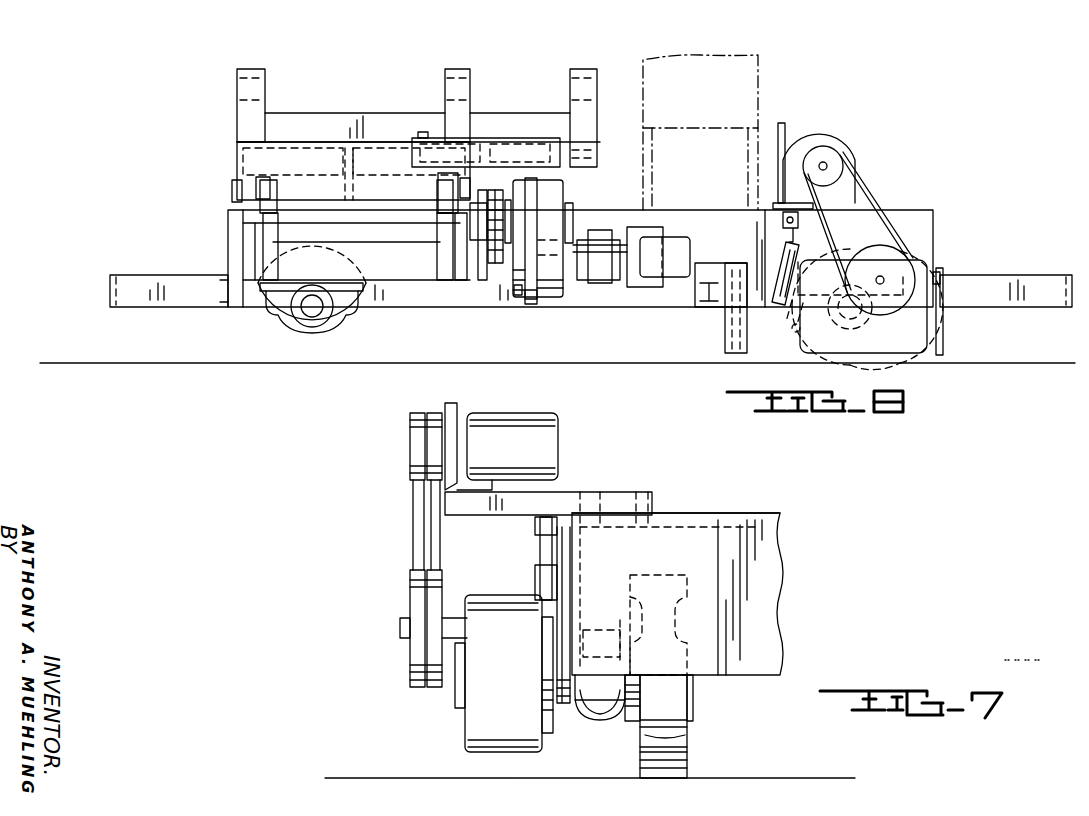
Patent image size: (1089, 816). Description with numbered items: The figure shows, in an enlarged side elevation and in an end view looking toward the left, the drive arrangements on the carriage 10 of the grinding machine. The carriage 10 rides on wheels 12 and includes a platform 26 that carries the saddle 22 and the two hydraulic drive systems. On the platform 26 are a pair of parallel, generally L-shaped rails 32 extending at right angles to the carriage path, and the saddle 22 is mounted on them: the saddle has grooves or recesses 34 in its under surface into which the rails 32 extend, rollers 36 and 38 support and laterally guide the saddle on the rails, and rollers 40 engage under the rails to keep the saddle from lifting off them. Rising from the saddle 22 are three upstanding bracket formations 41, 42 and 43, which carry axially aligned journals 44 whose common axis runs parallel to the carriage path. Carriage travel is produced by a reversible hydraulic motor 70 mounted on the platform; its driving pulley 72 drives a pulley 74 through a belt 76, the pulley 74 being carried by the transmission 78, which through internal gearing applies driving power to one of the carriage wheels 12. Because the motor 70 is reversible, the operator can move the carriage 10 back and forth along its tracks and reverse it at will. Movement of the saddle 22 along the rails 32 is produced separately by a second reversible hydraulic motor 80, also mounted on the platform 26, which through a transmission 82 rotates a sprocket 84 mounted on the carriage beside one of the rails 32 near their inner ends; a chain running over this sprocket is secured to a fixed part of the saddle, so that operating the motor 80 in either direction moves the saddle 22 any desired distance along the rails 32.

In FIG. 6, the carriage 10 is at (932, 195).
In FIG. 7, the carriage 10 is at (790, 569).
In FIG. 6, the wheels 12 is at (354, 334).
In FIG. 7, the wheels 12 is at (680, 734).
In FIG. 6, the saddle 22 is at (232, 122).
In FIG. 7, the platform 26 is at (738, 513).
In FIG. 6, the L-shaped rails 32 is at (278, 214).
In FIG. 6, the grooves or recesses 34 is at (253, 190).
In FIG. 6, the rollers 36 is at (266, 163).
In FIG. 6, the rollers 38 is at (412, 171).
In FIG. 6, the rollers 40 is at (270, 185).
In FIG. 6, the upstanding bracket formation 41 is at (246, 67).
In FIG. 6, the upstanding bracket formation 42 is at (456, 67).
In FIG. 6, the upstanding bracket formation 43 is at (588, 67).
In FIG. 6, the journals 44 is at (266, 78).
In FIG. 6, the hydraulic motor 70 is at (826, 128).
In FIG. 7, the hydraulic motor 70 is at (539, 420).
In FIG. 6, the driving pulley 72 is at (830, 164).
In FIG. 7, the driving pulley 72 is at (410, 450).
In FIG. 6, the pulley 74 is at (904, 278).
In FIG. 7, the pulley 74 is at (408, 658).
In FIG. 6, the belt 76 is at (890, 232).
In FIG. 7, the belt 76 is at (418, 506).
In FIG. 6, the transmission 78 is at (925, 325).
In FIG. 7, the transmission 78 is at (521, 703).
In FIG. 6, the hydraulic motor 80 is at (681, 254).
In FIG. 6, the transmission 82 is at (563, 291).
In FIG. 6, the sprocket 84 is at (498, 262).